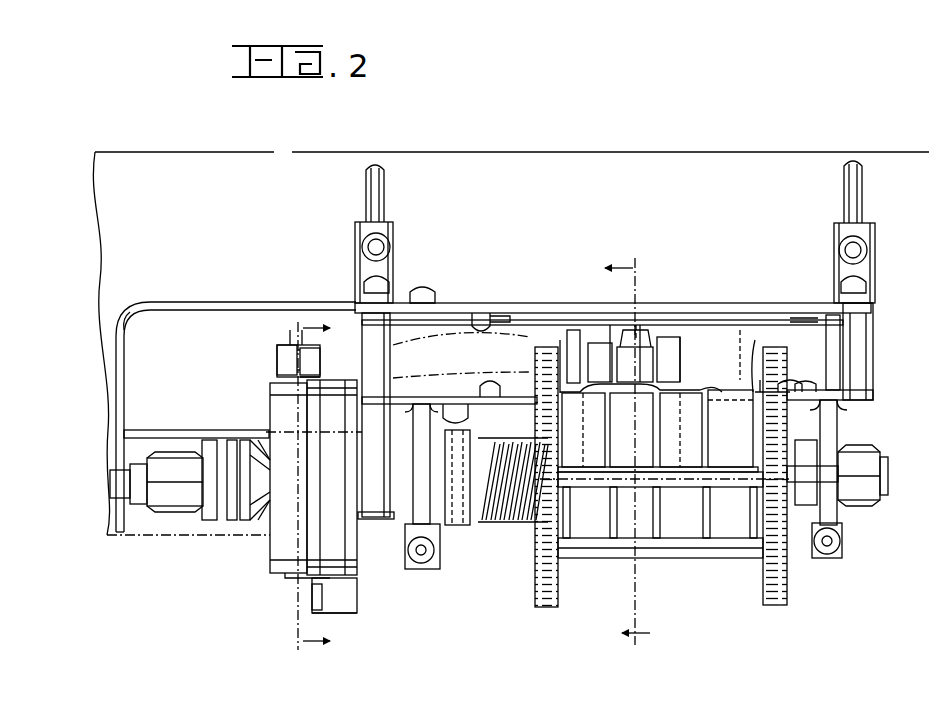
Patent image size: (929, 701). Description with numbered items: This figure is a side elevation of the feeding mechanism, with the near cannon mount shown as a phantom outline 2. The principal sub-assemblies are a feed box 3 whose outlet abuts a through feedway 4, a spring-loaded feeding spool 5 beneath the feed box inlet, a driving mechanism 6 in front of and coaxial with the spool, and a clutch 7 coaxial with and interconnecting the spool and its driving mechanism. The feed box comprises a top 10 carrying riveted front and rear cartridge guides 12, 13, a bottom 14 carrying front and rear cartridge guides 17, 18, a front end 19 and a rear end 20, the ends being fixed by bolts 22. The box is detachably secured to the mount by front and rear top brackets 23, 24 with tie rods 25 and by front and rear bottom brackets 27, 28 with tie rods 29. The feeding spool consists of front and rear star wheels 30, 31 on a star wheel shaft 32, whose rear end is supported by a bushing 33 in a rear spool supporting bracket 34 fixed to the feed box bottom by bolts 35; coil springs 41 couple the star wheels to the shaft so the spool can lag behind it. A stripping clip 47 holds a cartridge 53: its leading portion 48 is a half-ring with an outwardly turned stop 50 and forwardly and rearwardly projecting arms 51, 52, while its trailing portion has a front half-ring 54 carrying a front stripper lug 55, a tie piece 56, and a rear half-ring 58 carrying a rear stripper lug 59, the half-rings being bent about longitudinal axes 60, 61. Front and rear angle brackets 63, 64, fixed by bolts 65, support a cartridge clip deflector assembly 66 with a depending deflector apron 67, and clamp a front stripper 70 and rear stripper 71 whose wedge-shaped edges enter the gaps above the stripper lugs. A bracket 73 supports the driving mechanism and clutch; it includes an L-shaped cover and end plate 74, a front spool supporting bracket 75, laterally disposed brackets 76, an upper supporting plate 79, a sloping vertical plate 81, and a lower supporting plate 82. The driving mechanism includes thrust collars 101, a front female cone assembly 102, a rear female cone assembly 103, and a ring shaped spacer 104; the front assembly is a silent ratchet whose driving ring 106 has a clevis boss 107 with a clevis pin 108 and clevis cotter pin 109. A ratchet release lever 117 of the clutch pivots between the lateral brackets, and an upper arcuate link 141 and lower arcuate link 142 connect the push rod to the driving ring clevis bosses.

The phantom outline 2 is at (306, 152).
The feed box 3 is at (656, 288).
The through feedway 4 is at (753, 340).
The feeding spool 5 is at (683, 568).
The driving mechanism 6 is at (218, 570).
The clutch 7 is at (322, 485).
The top 10 is at (528, 303).
The front cartridge guide 12 is at (478, 318).
The rear cartridge guide 13 is at (806, 316).
The bottom 14 is at (418, 382).
The front cartridge guide 17 is at (498, 380).
The rear cartridge guide 18 is at (808, 384).
The front end 19 is at (368, 335).
The rear end 20 is at (870, 328).
The bolts 22 is at (870, 398).
The front top bracket 23 is at (392, 258).
The rear top bracket 24 is at (876, 258).
The tie rods 25 is at (384, 198).
The front bottom bracket 27 is at (418, 570).
The rear bottom bracket 28 is at (818, 560).
The tie rods 29 is at (436, 548).
The front star wheel 30 is at (560, 588).
The rear star wheel 31 is at (786, 594).
The star wheel shaft 32 is at (888, 472).
The bushing 33 is at (816, 505).
The rear spool supporting bracket 34 is at (838, 426).
The bolts 35 is at (422, 290).
The coil springs 41 is at (602, 558).
The stripping clip 47 is at (635, 364).
The leading portion 48 is at (642, 360).
The outwardly turned stop 50 is at (636, 330).
The forwardly projecting arm 51 is at (610, 345).
The rearwardly projecting arm 52 is at (652, 332).
The cartridge 53 is at (740, 335).
The front half-ring 54 is at (600, 362).
The front stripper lug 55 is at (583, 430).
The tie piece 56 is at (631, 430).
The rear half-ring 58 is at (672, 358).
The rear stripper lug 59 is at (681, 430).
The longitudinal axis 60 is at (576, 340).
The longitudinal axis 61 is at (690, 342).
The front angle bracket 63 is at (540, 412).
The rear angle bracket 64 is at (712, 442).
The bolts 65 is at (758, 386).
The cartridge clip deflector assembly 66 is at (625, 500).
The deflector apron 67 is at (668, 492).
The front stripper 70 is at (568, 380).
The rear stripper 71 is at (690, 390).
The bracket 73 is at (124, 305).
The L-shaped cover and end plate 74 is at (128, 320).
The front spool supporting bracket 75 is at (412, 420).
The brackets 76 is at (484, 468).
The upper supporting plate 79 is at (182, 436).
The vertical plate 81 is at (304, 336).
The lower supporting plate 82 is at (188, 512).
The thrust collars 101 is at (280, 420).
The front female cone assembly 102 is at (291, 586).
The rear female cone assembly 103 is at (362, 590).
The ring shaped spacer 104 is at (332, 477).
The driving ring 106 is at (282, 404).
The clevis boss 107 is at (288, 346).
The clevis pin 108 is at (277, 360).
The clevis cotter pin 109 is at (320, 357).
The ratchet release lever 117 is at (522, 515).
The upper arcuate link 141 is at (312, 374).
The lower arcuate link 142 is at (322, 622).